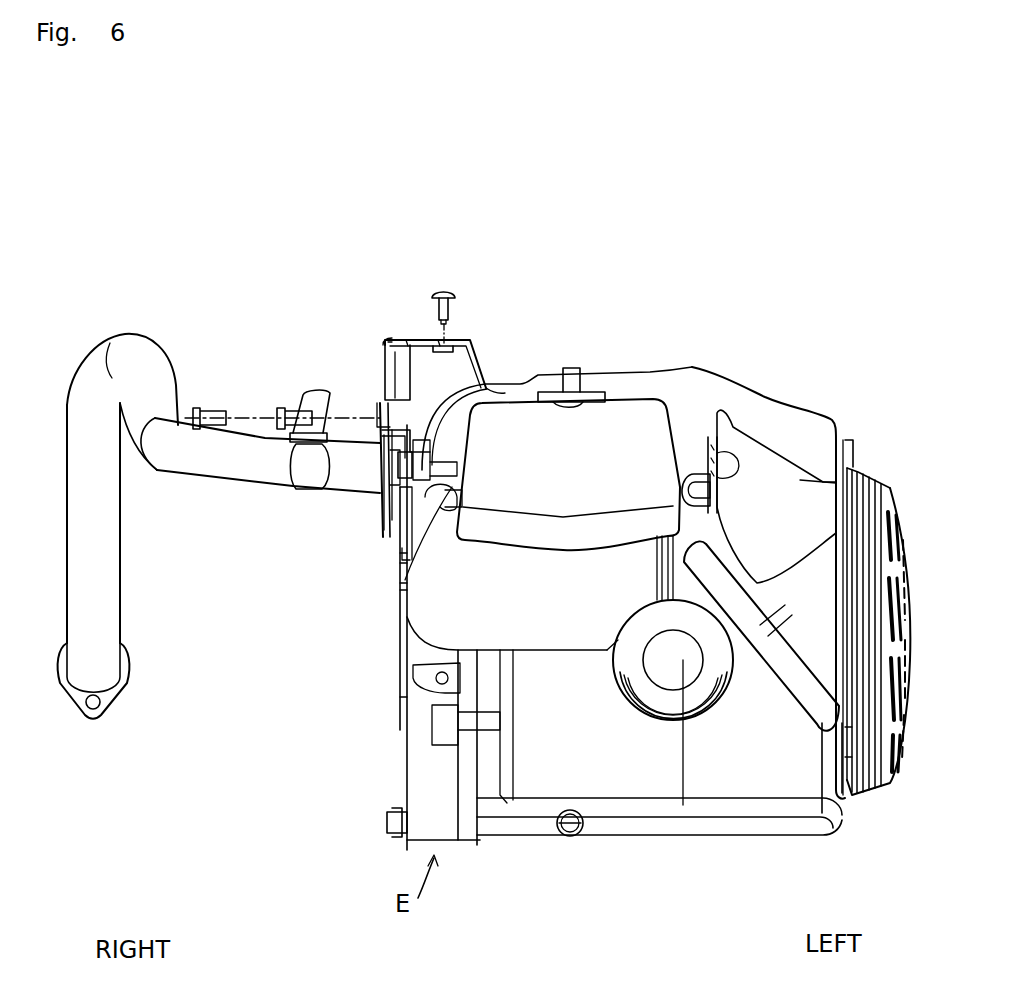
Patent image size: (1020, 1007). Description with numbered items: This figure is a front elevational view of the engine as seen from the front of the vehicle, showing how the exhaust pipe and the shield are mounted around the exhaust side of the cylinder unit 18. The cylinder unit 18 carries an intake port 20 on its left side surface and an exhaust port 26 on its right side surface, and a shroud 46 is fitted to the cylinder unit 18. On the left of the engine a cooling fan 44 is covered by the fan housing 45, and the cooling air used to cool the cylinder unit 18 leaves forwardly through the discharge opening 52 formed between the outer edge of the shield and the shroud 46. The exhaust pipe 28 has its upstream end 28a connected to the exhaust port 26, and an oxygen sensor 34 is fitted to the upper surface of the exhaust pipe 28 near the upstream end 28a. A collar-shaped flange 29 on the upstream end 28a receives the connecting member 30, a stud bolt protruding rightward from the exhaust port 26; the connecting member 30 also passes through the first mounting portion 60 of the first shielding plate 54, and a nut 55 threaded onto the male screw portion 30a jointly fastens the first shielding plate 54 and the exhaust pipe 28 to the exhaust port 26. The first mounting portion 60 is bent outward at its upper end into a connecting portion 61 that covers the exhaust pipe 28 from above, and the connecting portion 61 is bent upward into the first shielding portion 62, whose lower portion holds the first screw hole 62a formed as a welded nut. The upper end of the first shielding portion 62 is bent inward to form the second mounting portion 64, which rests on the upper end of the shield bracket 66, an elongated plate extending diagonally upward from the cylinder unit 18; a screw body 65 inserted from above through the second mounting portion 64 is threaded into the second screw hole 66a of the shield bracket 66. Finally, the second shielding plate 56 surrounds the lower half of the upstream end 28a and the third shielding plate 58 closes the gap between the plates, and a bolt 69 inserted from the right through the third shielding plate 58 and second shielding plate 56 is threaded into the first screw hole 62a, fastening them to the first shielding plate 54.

The cylinder unit 18 is at (520, 398).
The intake port 20 is at (720, 453).
The exhaust port 26 is at (418, 487).
The exhaust pipe 28 is at (175, 470).
The upstream end of the exhaust pipe 28a is at (270, 480).
The flange 29 is at (355, 550).
The connecting member 30 is at (420, 557).
The male screw portion 30a is at (383, 480).
The oxygen sensor 34 is at (303, 393).
The cooling fan 44 is at (910, 675).
The fan housing 45 is at (862, 483).
The shroud 46 is at (633, 380).
The discharge opening 52 is at (422, 363).
The first shielding plate 54 is at (383, 340).
The nut 55 is at (388, 483).
The second shielding plate 56 is at (388, 500).
The third shielding plate 58 is at (383, 448).
The first mounting portion 60 is at (330, 393).
The connecting portion 61 is at (415, 400).
The first shielding portion 62 is at (385, 378).
The first screw hole 62a is at (386, 340).
The second mounting portion 64 is at (408, 343).
The screw body 65 is at (446, 290).
The shield bracket 66 is at (478, 378).
The second screw hole 66a is at (445, 346).
The bolt 69 is at (213, 415).